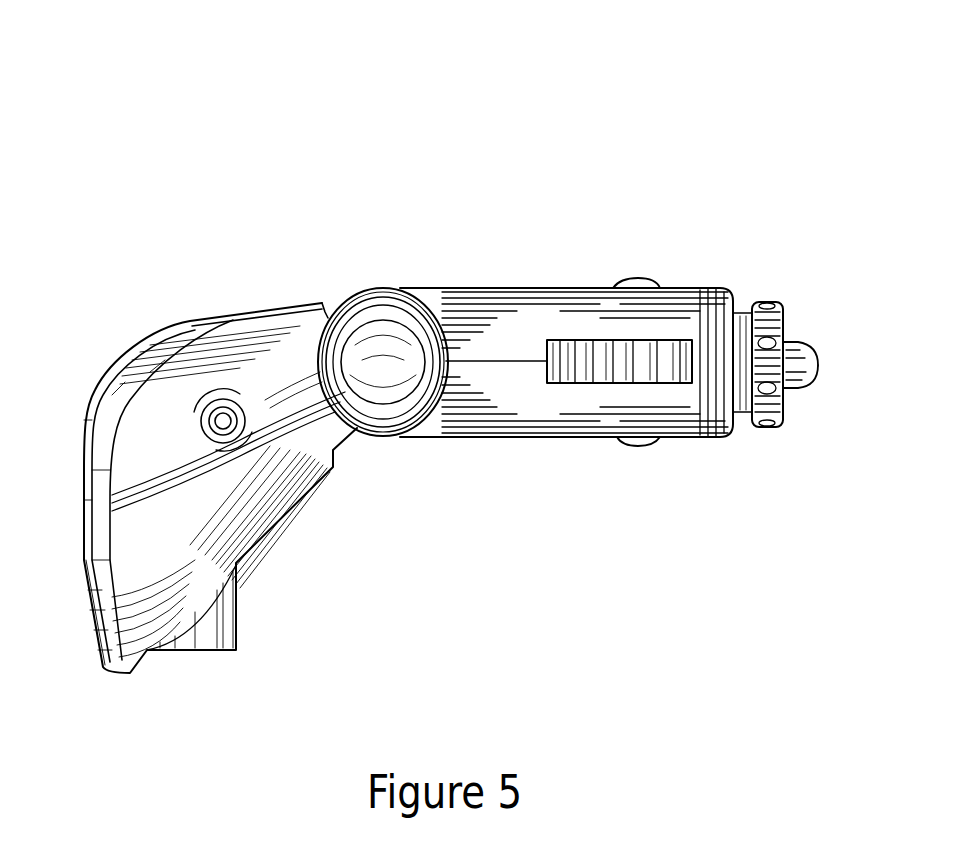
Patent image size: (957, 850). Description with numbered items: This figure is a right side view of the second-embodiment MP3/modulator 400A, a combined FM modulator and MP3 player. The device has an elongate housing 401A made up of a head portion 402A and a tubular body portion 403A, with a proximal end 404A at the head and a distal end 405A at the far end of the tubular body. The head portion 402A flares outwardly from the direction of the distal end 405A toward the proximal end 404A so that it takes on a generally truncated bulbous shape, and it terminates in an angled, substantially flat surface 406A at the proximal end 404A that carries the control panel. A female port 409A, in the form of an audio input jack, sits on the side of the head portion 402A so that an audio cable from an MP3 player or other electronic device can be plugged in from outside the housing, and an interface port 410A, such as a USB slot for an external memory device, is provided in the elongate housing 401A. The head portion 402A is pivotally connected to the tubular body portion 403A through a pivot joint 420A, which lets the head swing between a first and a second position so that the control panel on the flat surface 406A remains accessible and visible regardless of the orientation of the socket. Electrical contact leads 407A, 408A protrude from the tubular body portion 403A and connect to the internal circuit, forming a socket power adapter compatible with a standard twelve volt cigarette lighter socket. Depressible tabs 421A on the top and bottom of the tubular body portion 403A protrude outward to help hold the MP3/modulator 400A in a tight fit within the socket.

The MP3/modulator 400A is at (695, 110).
The elongate housing 401A is at (412, 288).
The head portion 402A is at (532, 290).
The tubular body portion 403A is at (262, 548).
The proximal end 404A is at (80, 433).
The distal end 405A is at (736, 302).
The substantially flat surface 406A is at (86, 574).
The electrical contact lead 407A is at (566, 375).
The electrical contact lead 408A is at (818, 367).
The female port 409A is at (246, 396).
The interface port 410A is at (212, 652).
The pivot joint 420A is at (388, 368).
The depressible tab 421A is at (642, 288).